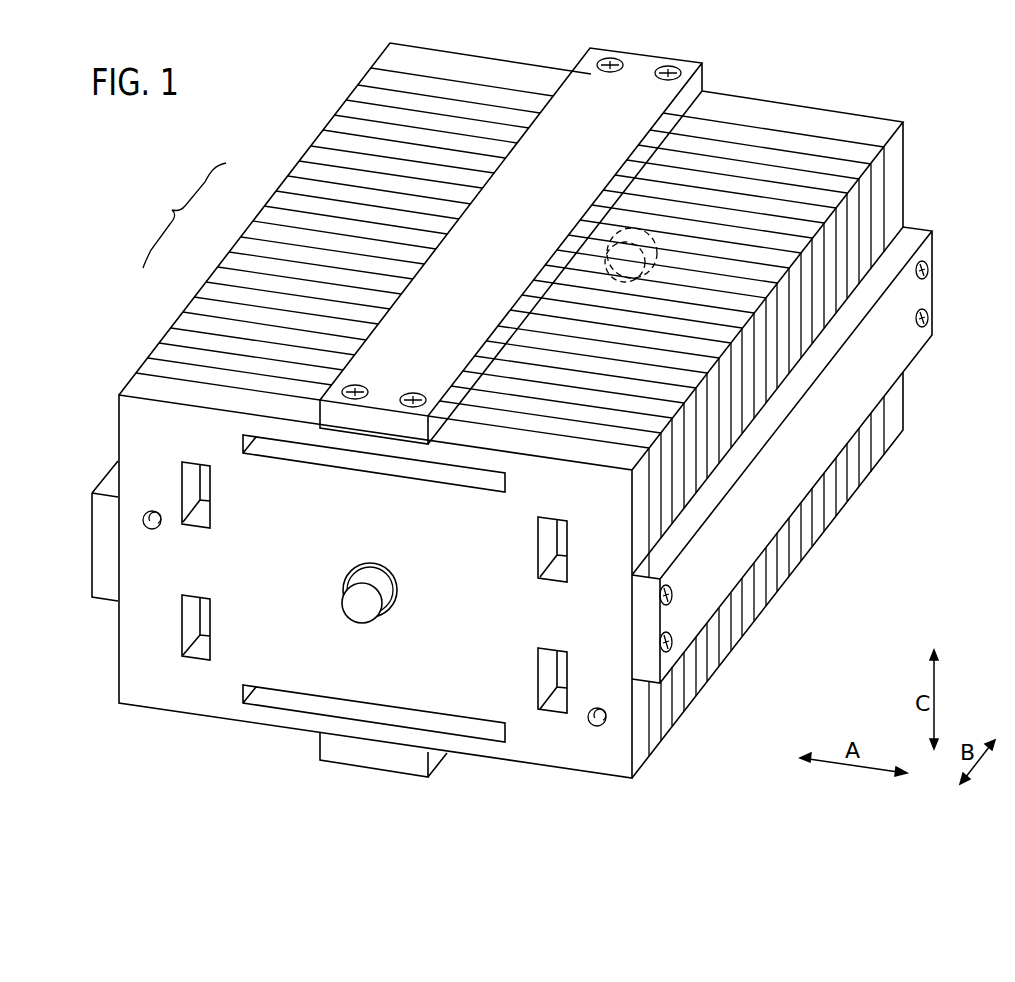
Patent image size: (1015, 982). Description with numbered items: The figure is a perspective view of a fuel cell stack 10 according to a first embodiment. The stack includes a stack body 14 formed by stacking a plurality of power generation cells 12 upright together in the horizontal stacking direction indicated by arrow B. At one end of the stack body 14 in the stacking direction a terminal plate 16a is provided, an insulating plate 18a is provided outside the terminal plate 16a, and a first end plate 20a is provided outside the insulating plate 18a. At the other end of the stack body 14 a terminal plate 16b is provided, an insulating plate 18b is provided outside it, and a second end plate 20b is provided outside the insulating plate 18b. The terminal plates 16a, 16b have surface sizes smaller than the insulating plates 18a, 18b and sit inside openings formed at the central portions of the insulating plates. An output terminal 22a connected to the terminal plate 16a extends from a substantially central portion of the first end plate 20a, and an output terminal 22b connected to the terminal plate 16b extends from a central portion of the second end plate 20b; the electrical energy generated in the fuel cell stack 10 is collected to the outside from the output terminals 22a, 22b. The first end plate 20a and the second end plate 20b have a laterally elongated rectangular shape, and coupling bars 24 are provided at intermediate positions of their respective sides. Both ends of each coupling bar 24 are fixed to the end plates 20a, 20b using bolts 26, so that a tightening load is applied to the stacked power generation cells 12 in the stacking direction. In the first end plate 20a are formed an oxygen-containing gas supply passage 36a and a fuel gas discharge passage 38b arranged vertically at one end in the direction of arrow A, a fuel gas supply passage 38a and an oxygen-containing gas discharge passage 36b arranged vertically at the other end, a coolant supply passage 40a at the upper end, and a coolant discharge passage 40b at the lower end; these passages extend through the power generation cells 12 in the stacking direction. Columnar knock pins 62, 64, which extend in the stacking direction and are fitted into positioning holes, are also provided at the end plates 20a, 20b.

The fuel cell stack 10 is at (111, 150).
The power generation cell 12 is at (275, 196).
The stack body 14 is at (184, 215).
The terminal plate 16a is at (175, 356).
The terminal plate 16b is at (366, 90).
The insulating plate 18a is at (152, 370).
The insulating plate 18b is at (374, 77).
The first end plate 20a is at (125, 393).
The second end plate 20b is at (779, 113).
The output terminal 22a is at (362, 610).
The output terminal 22b is at (618, 243).
The coupling bar 24 is at (648, 65).
The bolt 26 is at (409, 396).
The oxygen-containing gas supply passage 36a is at (209, 512).
The oxygen-containing gas discharge passage 36b is at (542, 672).
The fuel gas supply passage 38a is at (542, 544).
The fuel gas discharge passage 38b is at (205, 648).
The coolant supply passage 40a is at (318, 458).
The coolant discharge passage 40b is at (307, 696).
The knock pin 62 is at (590, 722).
The knock pin 64 is at (151, 529).